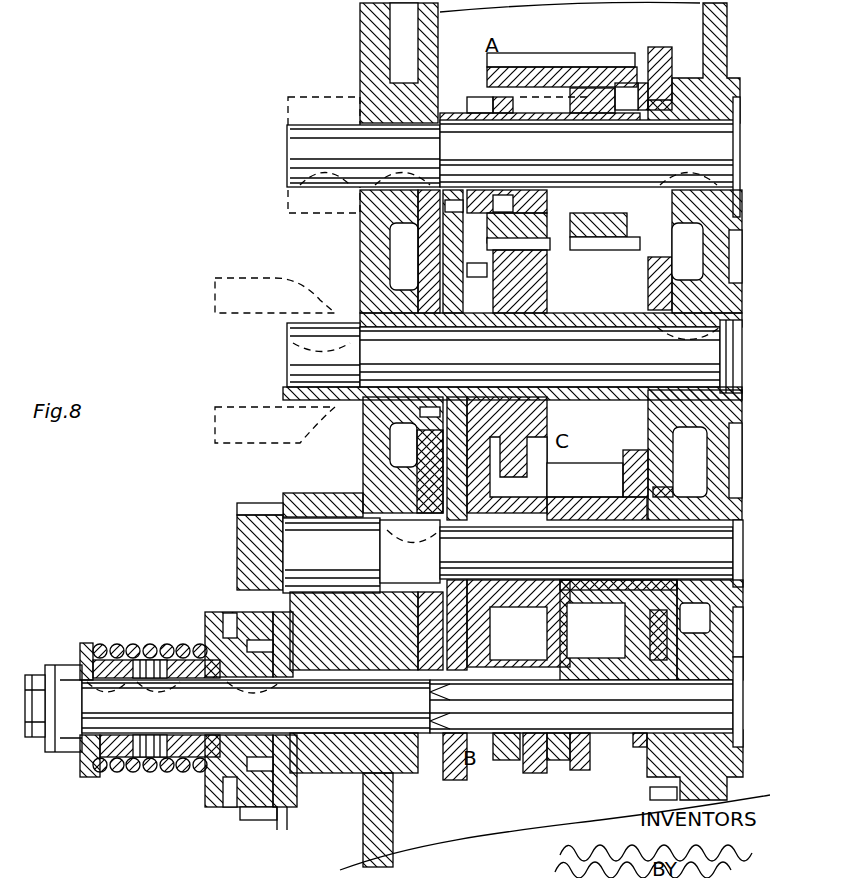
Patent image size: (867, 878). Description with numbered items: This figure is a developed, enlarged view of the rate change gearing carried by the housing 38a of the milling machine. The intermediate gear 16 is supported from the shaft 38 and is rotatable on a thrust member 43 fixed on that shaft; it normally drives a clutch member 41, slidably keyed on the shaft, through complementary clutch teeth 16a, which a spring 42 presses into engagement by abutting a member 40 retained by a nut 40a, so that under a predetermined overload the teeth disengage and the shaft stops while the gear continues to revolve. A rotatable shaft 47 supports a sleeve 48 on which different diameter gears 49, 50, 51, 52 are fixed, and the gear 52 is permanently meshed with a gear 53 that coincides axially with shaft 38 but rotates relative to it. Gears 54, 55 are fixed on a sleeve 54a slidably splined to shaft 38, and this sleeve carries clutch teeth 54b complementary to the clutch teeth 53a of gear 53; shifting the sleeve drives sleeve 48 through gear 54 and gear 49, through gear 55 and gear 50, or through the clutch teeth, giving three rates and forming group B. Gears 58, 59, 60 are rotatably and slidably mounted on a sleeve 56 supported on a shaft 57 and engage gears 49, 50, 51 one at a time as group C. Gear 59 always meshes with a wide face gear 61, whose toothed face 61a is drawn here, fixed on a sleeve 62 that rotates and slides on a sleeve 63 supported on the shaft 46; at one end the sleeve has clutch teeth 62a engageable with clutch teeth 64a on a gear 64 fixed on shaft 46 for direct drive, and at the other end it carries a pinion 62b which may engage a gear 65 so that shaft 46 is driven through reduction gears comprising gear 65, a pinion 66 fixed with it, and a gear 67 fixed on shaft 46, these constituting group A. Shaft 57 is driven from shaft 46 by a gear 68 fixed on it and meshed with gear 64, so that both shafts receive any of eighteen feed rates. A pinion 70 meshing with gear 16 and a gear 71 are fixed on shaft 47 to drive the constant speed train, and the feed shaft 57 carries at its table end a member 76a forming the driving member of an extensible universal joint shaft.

The intermediate gear 16 is at (240, 814).
The clutch teeth 16a is at (210, 800).
The shaft 38 is at (128, 725).
The housing 38a is at (360, 250).
The member 40 is at (90, 644).
The nut 40a is at (68, 668).
The clutch member 41 is at (208, 620).
The spring 42 is at (140, 645).
The thrust member 43 is at (280, 812).
The shaft 46 is at (290, 178).
The rotatable shaft 47 is at (710, 530).
The sleeve 48 is at (585, 500).
The gear 49 is at (518, 623).
The gear 50 is at (618, 630).
The gear 51 is at (632, 450).
The gear 52 is at (670, 490).
The gear 53 is at (660, 783).
The clutch teeth 53a is at (638, 748).
The gear 54 is at (500, 760).
The sleeve 54a is at (560, 760).
The clutch teeth 54b is at (591, 758).
The gear 55 is at (530, 773).
The sleeve 56 is at (565, 390).
The shaft 57 is at (300, 388).
The gear 58 is at (504, 275).
The gear 59 is at (520, 262).
The gear 60 is at (545, 258).
The wide face gear 61 is at (568, 53).
The gear teeth 61a is at (560, 68).
The sleeve 62 is at (520, 95).
The clutch teeth 62a is at (630, 83).
The pinion 62b is at (480, 113).
The sleeve 63 is at (404, 43).
The gear 64 is at (666, 68).
The clutch teeth 64a is at (643, 83).
The gear 65 is at (455, 200).
The pinion 66 is at (435, 395).
The gear 67 is at (418, 66).
The gear 68 is at (707, 251).
The pinion 70 is at (258, 505).
The gear 71 is at (420, 456).
The member 76a is at (247, 444).